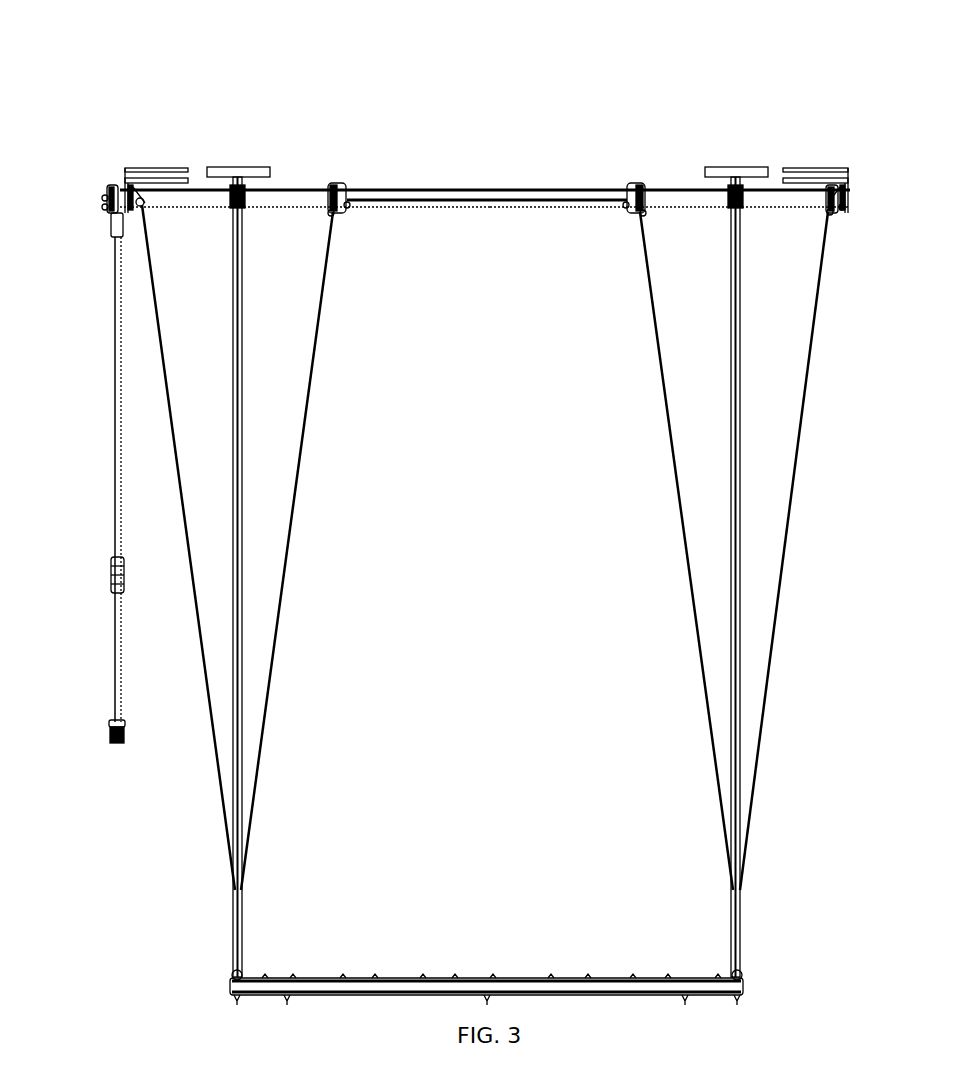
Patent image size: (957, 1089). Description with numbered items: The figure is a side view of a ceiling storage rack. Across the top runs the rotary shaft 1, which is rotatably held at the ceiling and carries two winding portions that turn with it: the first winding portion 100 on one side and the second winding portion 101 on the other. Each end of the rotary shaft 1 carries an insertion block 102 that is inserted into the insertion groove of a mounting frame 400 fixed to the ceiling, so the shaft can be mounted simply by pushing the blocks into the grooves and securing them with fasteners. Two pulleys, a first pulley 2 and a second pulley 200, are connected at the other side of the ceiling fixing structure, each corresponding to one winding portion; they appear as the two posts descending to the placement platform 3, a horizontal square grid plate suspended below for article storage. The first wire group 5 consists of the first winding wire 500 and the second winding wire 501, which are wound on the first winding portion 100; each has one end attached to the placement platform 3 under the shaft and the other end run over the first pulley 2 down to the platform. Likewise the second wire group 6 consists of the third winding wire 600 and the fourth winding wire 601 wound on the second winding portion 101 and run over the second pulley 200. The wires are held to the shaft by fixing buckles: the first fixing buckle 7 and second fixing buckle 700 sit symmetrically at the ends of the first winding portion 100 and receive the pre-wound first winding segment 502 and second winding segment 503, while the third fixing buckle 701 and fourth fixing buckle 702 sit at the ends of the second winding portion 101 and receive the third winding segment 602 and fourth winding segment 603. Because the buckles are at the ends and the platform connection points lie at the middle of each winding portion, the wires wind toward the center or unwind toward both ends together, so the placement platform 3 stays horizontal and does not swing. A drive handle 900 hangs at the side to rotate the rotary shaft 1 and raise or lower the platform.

The rotary shaft 1 is at (498, 178).
The first winding portion 100 is at (290, 205).
The second winding portion 101 is at (693, 197).
The insertion block 102 is at (140, 168).
The first pulley 2 is at (247, 167).
The second pulley 200 is at (737, 168).
The placement platform 3 is at (757, 982).
The mounting frame 400 is at (150, 168).
The first wire group 5 is at (280, 547).
The first winding wire 500 is at (160, 300).
The second winding wire 501 is at (318, 317).
The first winding segment 502 is at (137, 197).
The second winding segment 503 is at (328, 212).
The second wire group 6 is at (741, 551).
The third winding wire 600 is at (658, 345).
The fourth winding wire 601 is at (795, 358).
The third winding segment 602 is at (645, 195).
The fourth winding segment 603 is at (830, 195).
The first fixing buckle 7 is at (116, 198).
The second fixing buckle 700 is at (336, 183).
The third fixing buckle 701 is at (632, 185).
The fourth fixing buckle 702 is at (850, 208).
The drive handle 900 is at (115, 358).